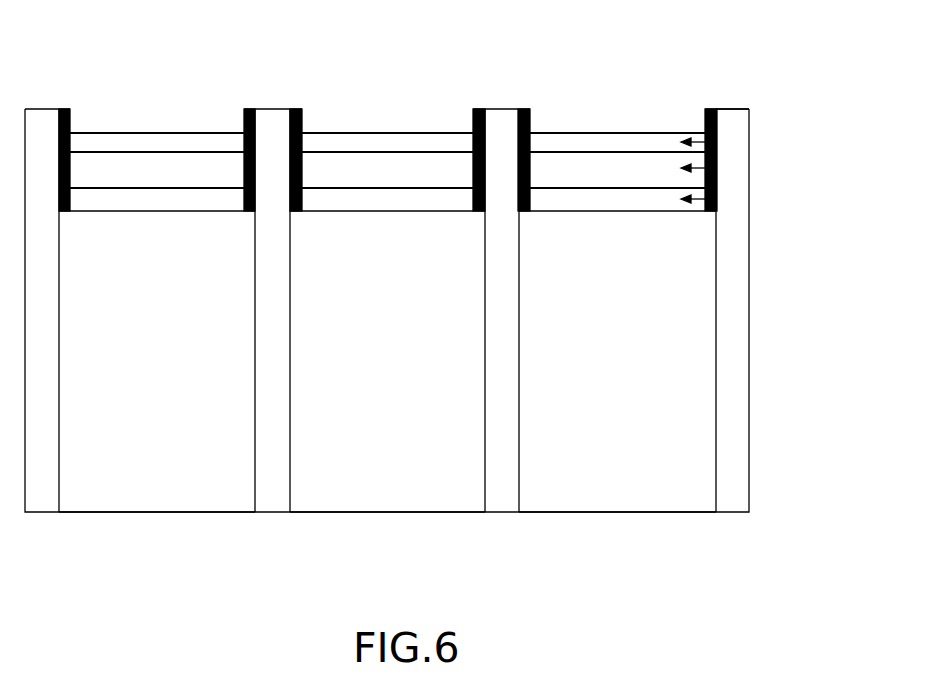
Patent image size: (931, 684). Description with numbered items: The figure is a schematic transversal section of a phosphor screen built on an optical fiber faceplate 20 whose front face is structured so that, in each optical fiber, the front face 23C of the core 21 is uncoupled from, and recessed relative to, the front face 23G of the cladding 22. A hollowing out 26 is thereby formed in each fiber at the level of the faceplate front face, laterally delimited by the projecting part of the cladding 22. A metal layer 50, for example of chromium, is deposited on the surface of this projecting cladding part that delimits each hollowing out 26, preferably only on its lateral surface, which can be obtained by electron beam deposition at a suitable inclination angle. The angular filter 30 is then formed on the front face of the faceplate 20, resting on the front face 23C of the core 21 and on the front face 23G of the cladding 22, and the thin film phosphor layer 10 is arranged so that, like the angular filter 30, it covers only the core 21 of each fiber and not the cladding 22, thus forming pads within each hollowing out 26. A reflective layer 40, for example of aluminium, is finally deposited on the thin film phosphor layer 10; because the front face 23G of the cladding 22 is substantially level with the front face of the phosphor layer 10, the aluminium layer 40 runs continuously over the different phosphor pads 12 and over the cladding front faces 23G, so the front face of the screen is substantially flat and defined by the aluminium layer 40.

The thin film phosphor layer 10 is at (385, 166).
The phosphor pad 12 is at (717, 162).
The optical fiber faceplate 20 is at (798, 352).
The core 21 is at (607, 500).
The cladding 22 is at (502, 500).
The front face of the core 23C is at (668, 212).
The front face of the cladding 23G is at (737, 109).
The hollowing out 26 is at (616, 100).
The angular filter 30 is at (717, 198).
The reflective layer 40 is at (717, 139).
The metal layer 50 is at (523, 109).